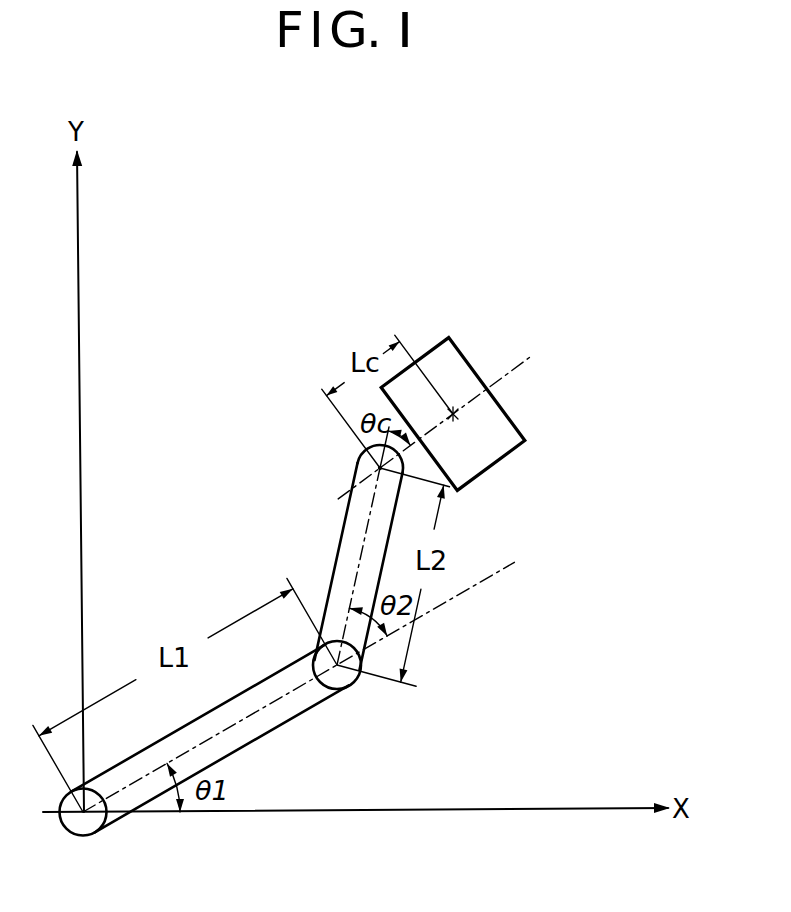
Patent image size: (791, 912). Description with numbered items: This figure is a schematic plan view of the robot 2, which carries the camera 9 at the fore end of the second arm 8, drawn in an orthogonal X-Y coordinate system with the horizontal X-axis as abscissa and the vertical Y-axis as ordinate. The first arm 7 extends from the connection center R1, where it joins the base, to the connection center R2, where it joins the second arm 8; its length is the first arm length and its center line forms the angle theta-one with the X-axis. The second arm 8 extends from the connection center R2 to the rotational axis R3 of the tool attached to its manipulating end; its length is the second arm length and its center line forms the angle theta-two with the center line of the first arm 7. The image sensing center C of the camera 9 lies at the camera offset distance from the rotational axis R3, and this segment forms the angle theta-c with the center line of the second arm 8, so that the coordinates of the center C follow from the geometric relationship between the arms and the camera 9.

The robot 2 is at (567, 540).
The first arm 7 is at (287, 720).
The second arm 8 is at (345, 548).
The camera 9 is at (433, 401).
The connection center R1 is at (100, 829).
The connection center R2 is at (349, 688).
The rotational axis R3 is at (373, 463).
The image sensing center C is at (451, 410).